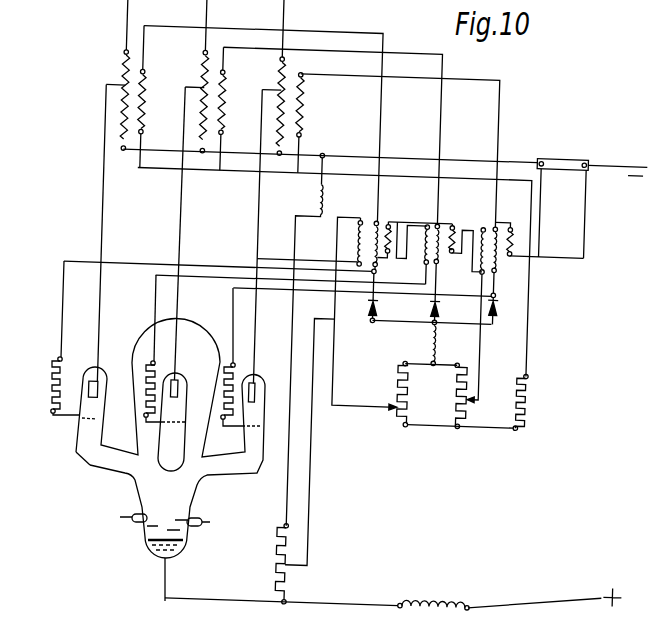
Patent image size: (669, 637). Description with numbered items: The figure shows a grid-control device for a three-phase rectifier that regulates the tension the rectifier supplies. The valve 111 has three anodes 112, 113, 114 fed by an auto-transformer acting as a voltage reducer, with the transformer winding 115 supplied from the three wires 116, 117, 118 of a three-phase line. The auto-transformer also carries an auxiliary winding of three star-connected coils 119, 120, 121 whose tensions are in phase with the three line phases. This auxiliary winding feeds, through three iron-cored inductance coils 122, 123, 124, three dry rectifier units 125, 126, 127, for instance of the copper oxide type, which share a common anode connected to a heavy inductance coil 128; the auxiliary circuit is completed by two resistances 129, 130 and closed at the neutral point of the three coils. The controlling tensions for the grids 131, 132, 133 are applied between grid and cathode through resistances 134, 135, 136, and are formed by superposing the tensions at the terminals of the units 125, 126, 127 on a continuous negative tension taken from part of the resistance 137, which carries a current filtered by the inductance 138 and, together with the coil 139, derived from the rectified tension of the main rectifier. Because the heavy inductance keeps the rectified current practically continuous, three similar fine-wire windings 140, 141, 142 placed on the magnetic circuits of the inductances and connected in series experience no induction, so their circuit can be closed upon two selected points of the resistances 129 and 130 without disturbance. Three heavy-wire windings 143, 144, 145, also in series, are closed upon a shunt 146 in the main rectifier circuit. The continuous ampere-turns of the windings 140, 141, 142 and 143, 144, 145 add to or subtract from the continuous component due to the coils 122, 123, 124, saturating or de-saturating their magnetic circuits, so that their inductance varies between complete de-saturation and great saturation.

The valve 111 is at (170, 459).
The anode 112 is at (102, 399).
The anode 113 is at (180, 385).
The anode 114 is at (260, 393).
The resistor 115 is at (180, 95).
The wire of three-phase line 116 is at (115, 43).
The wire of three-phase line 117 is at (198, 15).
The wire of three-phase line 118 is at (274, 21).
The coil of auxiliary winding 119 is at (138, 106).
The coil of auxiliary winding 120 is at (236, 109).
The coil of auxiliary winding 121 is at (299, 95).
The inductance coil with iron core 122 is at (370, 219).
The inductance coil with iron core 123 is at (433, 220).
The inductance coil with iron core 124 is at (492, 220).
The dry rectifier unit 125 is at (358, 311).
The dry rectifier unit 126 is at (417, 312).
The dry rectifier unit 127 is at (485, 300).
The heavy inductance coil 128 is at (436, 351).
The resistance 129 is at (400, 391).
The resistance 130 is at (457, 392).
The grid 131 is at (92, 421).
The grid 132 is at (82, 465).
The grid 133 is at (252, 430).
The resistance 134 is at (53, 372).
The resistance 135 is at (146, 366).
The resistance 136 is at (238, 366).
The resistance 137 is at (288, 542).
The inductance 138 is at (312, 200).
The coil 139 is at (428, 593).
The fine wire winding 140 is at (354, 238).
The fine wire winding 141 is at (421, 247).
The fine wire winding 142 is at (478, 252).
The heavy wire winding 143 is at (386, 221).
The heavy wire winding 144 is at (450, 220).
The heavy wire winding 145 is at (508, 220).
The shunt 146 is at (553, 149).